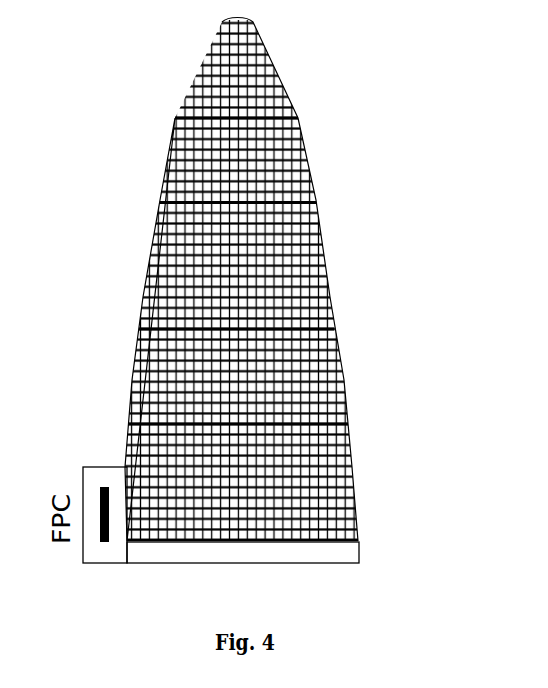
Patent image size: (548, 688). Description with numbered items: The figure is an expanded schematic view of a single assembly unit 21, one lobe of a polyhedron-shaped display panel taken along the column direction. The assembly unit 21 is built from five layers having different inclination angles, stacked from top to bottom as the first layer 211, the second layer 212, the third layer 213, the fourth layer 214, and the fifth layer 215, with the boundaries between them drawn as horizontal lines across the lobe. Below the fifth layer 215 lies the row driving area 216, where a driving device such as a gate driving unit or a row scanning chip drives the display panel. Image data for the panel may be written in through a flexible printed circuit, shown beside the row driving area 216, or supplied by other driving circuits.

The assembly unit 21 is at (262, 294).
The first layer 211 is at (465, 118).
The second layer 212 is at (465, 202).
The third layer 213 is at (465, 329).
The fourth layer 214 is at (463, 424).
The fifth layer 215 is at (463, 542).
The row driving area 216 is at (262, 560).